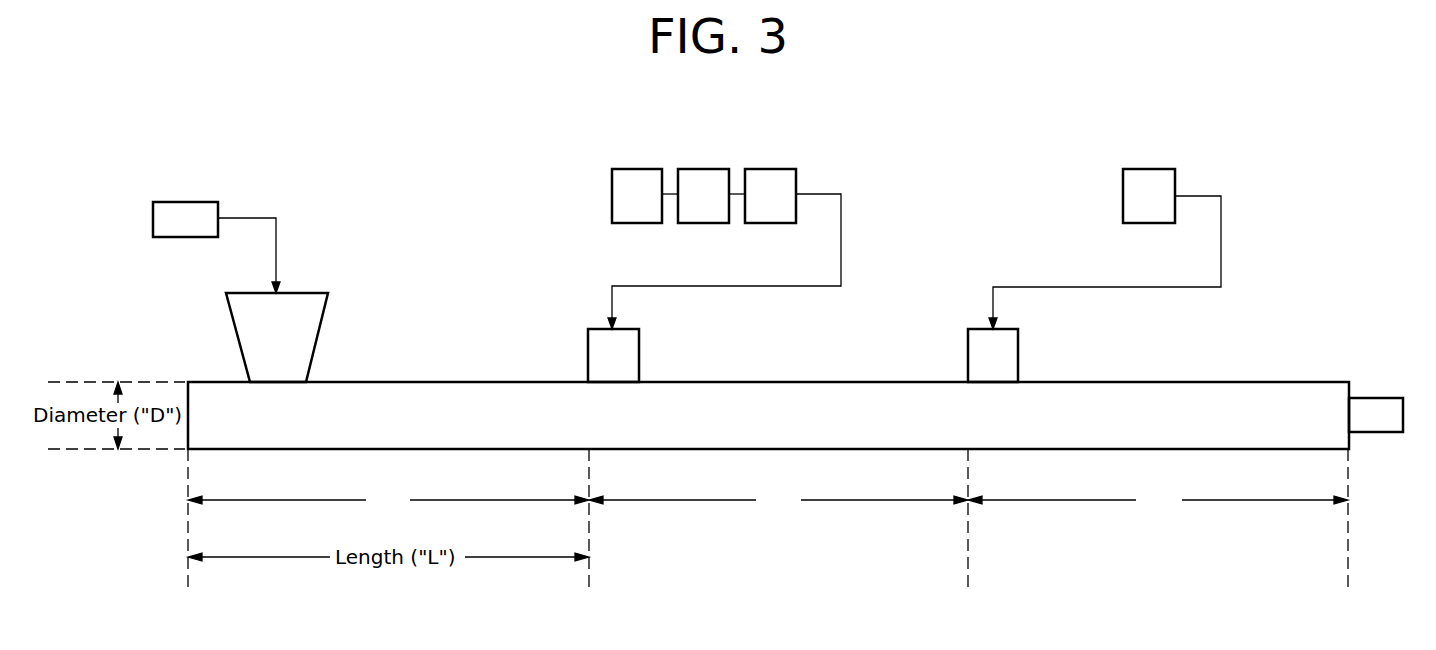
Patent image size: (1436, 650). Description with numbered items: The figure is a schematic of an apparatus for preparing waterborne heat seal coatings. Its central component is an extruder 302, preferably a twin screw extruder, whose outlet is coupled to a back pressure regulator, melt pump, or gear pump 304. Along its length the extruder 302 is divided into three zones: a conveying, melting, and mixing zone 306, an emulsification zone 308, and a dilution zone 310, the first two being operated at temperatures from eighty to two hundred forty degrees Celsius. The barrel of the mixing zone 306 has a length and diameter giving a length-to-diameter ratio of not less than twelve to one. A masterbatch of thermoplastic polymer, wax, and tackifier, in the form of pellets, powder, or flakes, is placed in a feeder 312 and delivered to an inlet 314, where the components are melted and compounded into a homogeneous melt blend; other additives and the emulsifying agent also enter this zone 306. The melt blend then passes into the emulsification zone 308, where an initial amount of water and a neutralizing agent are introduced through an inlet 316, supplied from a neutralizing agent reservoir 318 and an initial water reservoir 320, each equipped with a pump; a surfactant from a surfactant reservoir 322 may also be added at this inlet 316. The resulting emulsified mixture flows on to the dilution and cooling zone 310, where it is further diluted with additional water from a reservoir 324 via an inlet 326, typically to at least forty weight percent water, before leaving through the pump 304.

The extruder 302 is at (455, 381).
The back pressure regulator, melt pump, or gear pump 304 is at (1375, 398).
The conveying, melting, and mixing zone 306 is at (388, 500).
The emulsification zone 308 is at (778, 500).
The dilution zone 310 is at (1158, 500).
The feeder 312 is at (153, 216).
The inlet 314 is at (236, 332).
The inlet 316 is at (639, 350).
The neutralizing agent reservoir 318 is at (623, 169).
The initial water reservoir 320 is at (705, 169).
The surfactant reservoir 322 is at (780, 169).
The reservoir 324 is at (1167, 169).
The inlet 326 is at (1018, 352).